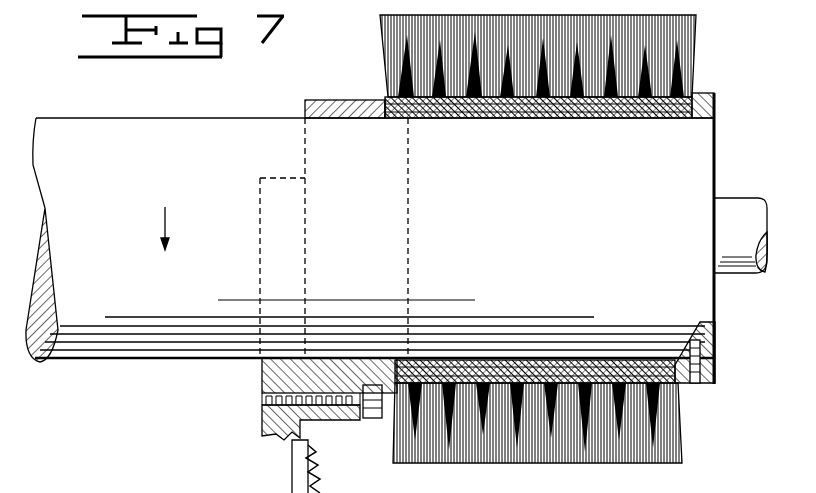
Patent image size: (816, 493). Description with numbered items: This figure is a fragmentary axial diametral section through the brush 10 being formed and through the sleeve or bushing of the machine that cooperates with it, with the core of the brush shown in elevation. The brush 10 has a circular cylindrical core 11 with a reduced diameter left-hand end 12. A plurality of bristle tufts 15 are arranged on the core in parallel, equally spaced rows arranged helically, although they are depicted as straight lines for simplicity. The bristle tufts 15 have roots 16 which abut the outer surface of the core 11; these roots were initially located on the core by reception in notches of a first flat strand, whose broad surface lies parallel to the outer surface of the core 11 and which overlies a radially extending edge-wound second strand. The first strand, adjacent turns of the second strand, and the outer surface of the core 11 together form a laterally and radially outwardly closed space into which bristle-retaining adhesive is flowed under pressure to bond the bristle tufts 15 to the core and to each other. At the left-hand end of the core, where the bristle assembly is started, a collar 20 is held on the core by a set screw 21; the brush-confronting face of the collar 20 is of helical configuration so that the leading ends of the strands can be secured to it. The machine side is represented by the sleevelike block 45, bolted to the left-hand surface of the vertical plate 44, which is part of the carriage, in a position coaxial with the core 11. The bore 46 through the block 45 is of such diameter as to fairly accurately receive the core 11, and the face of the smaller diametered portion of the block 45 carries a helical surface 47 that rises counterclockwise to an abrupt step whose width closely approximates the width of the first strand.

The brush 10 is at (700, 93).
The circular cylindrical core 11 is at (110, 345).
The reduced diameter left-hand end 12 is at (745, 208).
The bristle tufts 15 is at (395, 50).
The roots 16 is at (505, 118).
The collar 20 is at (715, 108).
The set screw 21 is at (716, 380).
The vertical plate 44 is at (262, 380).
The sleevelike block 45 is at (320, 100).
The bore 46 is at (350, 420).
The helical surface 47 is at (380, 118).